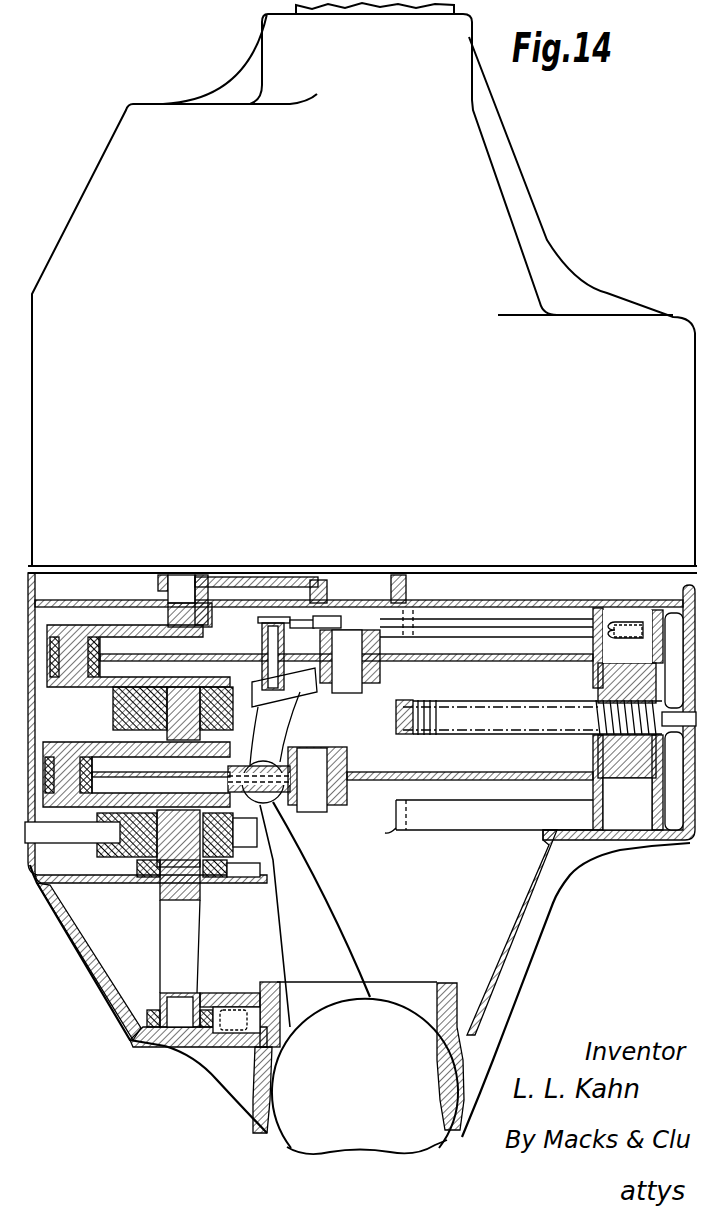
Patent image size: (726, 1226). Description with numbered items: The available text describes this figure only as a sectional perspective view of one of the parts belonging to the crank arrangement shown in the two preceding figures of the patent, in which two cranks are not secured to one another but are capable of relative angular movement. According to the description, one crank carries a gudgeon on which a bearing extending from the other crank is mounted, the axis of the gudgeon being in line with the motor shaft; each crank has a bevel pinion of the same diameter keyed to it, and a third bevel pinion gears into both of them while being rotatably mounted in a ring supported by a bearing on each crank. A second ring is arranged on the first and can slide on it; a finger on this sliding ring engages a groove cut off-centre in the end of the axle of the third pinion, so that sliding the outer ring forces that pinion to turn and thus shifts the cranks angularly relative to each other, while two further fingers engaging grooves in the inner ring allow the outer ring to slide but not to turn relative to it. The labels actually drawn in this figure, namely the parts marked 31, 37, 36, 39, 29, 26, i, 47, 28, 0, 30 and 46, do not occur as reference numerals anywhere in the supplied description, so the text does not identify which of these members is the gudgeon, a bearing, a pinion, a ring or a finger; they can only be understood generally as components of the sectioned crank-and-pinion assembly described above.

The cover plate 31 is at (283, 578).
The guide bar 37 is at (207, 657).
The bearing bracket 36 is at (100, 678).
The gear 39 is at (130, 727).
The plug 29 is at (653, 638).
The adjusting screw 26 is at (490, 722).
The lever i is at (266, 760).
The plug 47 is at (288, 803).
The housing wall 28 is at (658, 840).
The shaft 0 is at (177, 940).
The bearing plate 30 is at (217, 1003).
The ball socket 46 is at (365, 1033).